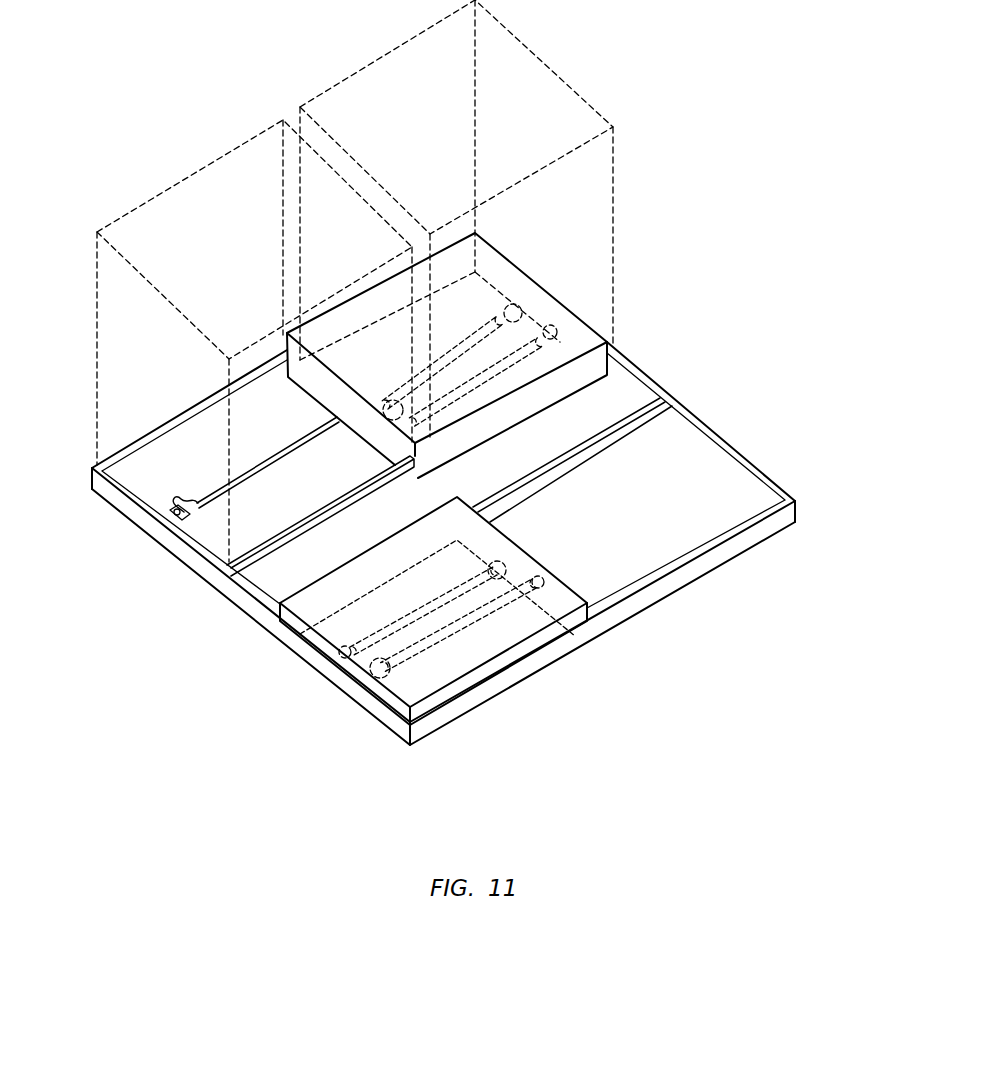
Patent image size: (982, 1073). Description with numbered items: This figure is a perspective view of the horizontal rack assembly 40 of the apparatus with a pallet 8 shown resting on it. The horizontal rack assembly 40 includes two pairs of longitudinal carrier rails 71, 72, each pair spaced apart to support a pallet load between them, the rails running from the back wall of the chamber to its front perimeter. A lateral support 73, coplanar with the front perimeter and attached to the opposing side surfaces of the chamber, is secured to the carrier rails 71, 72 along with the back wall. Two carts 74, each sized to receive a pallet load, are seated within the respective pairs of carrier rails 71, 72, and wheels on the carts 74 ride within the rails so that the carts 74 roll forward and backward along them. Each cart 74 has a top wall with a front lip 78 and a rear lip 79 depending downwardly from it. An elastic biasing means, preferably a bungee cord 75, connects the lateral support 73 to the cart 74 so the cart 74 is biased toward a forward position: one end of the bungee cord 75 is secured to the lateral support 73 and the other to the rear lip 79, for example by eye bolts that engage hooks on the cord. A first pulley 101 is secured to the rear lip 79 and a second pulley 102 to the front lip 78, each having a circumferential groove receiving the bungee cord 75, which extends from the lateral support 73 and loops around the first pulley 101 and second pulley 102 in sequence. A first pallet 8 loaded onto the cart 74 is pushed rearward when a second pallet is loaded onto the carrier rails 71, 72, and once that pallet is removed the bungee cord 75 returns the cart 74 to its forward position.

The container (phantom) 8 is at (215, 160).
The horizontal rack assembly 40 is at (198, 742).
The longitudinal carrier rails 71 is at (133, 450).
The longitudinal carrier rails 72 is at (665, 407).
The lateral support 73 is at (176, 538).
The cart 74 is at (556, 352).
The bungee cord 75 is at (485, 318).
The front lip 78 is at (337, 420).
The rear lip 79 is at (565, 338).
The first pulley 101 is at (410, 399).
The second pulley 102 is at (515, 303).